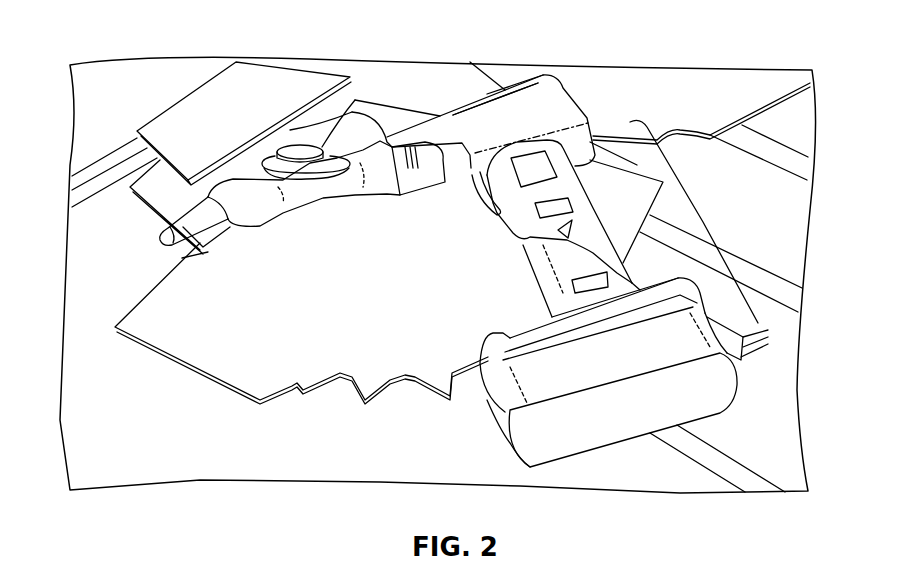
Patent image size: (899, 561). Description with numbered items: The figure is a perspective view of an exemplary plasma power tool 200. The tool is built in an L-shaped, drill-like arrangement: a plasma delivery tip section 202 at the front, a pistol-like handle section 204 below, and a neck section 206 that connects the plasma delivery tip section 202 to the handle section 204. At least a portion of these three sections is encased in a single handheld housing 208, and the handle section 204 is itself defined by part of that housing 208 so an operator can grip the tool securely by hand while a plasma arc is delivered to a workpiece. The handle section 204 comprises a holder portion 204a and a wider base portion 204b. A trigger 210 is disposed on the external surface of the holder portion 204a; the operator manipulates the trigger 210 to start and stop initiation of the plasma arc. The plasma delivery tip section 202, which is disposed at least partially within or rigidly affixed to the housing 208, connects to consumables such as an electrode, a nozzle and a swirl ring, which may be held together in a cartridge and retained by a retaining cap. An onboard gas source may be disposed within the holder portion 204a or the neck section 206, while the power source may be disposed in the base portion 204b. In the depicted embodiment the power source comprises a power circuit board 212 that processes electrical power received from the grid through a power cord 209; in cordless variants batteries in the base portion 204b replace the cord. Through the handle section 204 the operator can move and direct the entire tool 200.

The plasma power tool 200 is at (397, 277).
The plasma delivery tip section 202 is at (258, 130).
The handle section 204 is at (710, 222).
The holder portion 204a is at (517, 237).
The base portion 204b is at (612, 360).
The neck section 206 is at (477, 98).
The housing 208 is at (563, 92).
The power cord 209 is at (767, 330).
The trigger 210 is at (487, 190).
The power circuit board 212 is at (507, 413).